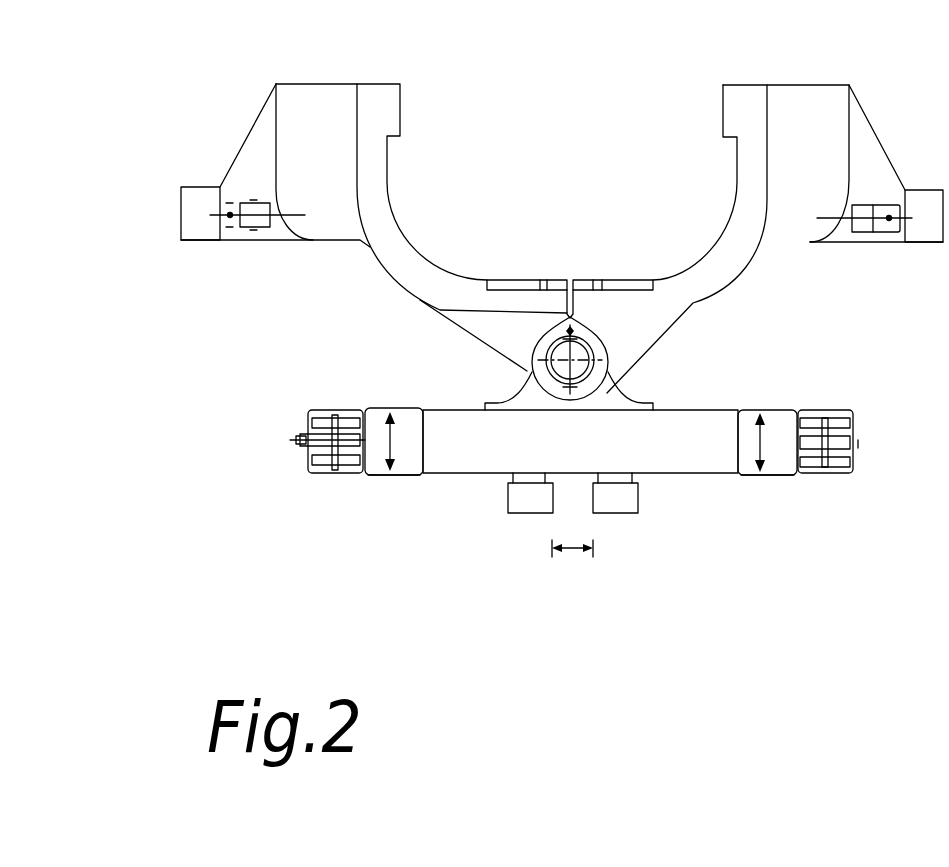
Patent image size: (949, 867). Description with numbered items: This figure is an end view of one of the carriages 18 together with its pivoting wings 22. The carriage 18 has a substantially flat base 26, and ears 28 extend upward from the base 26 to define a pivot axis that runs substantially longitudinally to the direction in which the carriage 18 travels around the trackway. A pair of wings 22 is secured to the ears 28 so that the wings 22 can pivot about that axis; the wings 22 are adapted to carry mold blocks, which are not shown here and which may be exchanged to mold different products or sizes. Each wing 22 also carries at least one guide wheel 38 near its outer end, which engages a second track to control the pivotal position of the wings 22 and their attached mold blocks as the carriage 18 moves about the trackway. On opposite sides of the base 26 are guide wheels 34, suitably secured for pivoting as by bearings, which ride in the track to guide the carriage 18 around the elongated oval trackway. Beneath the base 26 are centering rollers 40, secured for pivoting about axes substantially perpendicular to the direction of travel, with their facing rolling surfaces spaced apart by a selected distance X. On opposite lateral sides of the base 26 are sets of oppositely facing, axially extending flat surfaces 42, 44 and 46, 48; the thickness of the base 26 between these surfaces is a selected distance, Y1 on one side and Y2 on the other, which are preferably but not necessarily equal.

The carriage 18 is at (562, 212).
The wing 22 is at (311, 122).
The base 26 is at (607, 456).
The ear 28 is at (607, 393).
The guide wheel 34 is at (327, 475).
The guide wheel 38 is at (190, 215).
The centering roller 40 is at (525, 497).
The flat surface 42 is at (380, 408).
The flat surface 44 is at (378, 476).
The flat surface 46 is at (770, 410).
The flat surface 48 is at (752, 477).